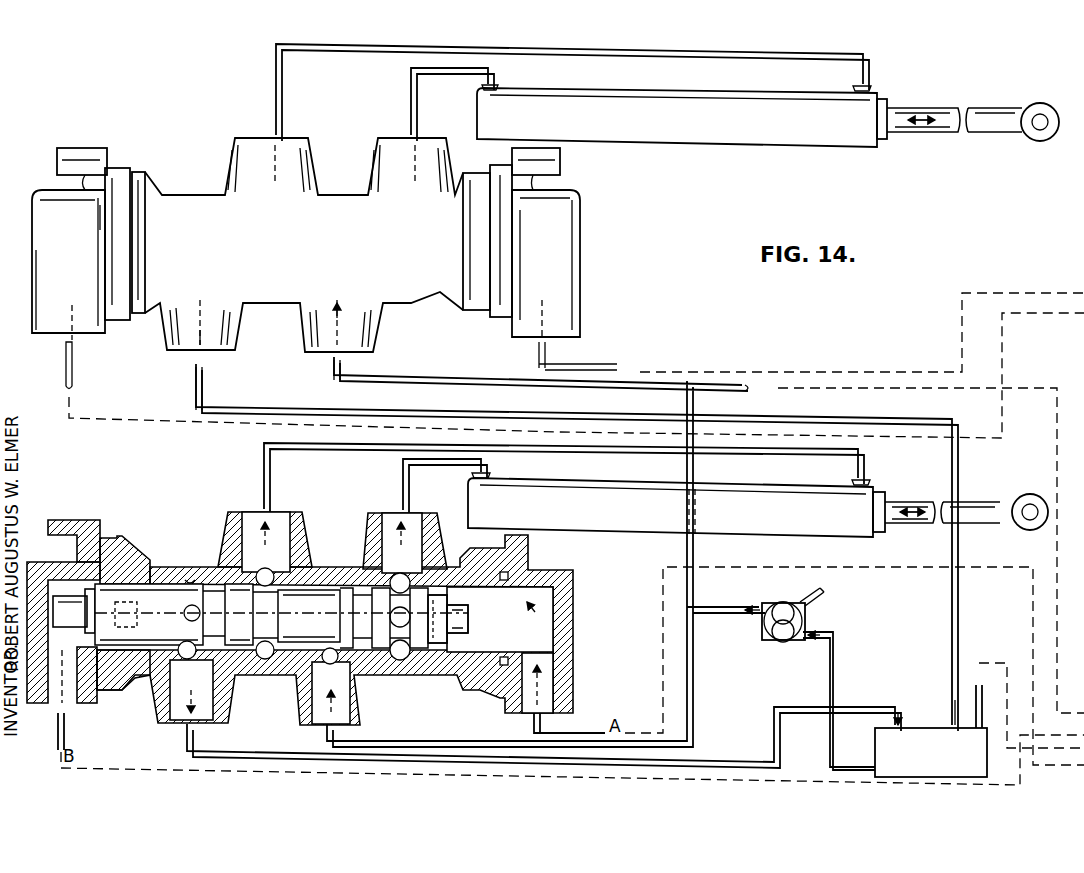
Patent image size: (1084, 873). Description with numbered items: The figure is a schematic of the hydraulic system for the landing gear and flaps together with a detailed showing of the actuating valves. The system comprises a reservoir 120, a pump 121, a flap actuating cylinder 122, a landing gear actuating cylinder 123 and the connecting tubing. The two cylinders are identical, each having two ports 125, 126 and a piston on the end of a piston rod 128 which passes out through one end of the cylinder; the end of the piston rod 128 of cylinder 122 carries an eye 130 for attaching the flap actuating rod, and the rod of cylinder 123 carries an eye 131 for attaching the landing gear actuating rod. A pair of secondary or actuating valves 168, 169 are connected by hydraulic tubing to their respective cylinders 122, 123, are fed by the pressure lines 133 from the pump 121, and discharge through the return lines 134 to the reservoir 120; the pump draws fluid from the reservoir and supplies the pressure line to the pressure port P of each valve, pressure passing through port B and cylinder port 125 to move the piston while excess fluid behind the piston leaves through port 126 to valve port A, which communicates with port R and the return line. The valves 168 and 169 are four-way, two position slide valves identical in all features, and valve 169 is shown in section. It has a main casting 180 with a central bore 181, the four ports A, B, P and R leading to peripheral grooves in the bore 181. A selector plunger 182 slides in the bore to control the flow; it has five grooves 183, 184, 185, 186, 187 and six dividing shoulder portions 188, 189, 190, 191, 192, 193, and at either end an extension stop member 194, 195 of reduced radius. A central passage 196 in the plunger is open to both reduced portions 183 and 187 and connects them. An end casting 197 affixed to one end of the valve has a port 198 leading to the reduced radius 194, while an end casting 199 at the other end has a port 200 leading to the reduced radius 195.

The reservoir 120 is at (930, 728).
The pump 121 is at (805, 607).
The flap actuating cylinder 122 is at (665, 530).
The landing gear actuating cylinder 123 is at (775, 142).
The port 125 is at (497, 90).
The port 126 is at (870, 92).
The piston rod 128 is at (897, 130).
The eye 130 is at (1032, 510).
The eye 131 is at (1040, 118).
The pressure line 133 is at (450, 382).
The return line 134 is at (283, 409).
The secondary valve 168 is at (200, 152).
The secondary valve 169 is at (178, 506).
The main casting 180 is at (345, 568).
The central bore 181 is at (190, 584).
The selector plunger 182 is at (291, 640).
The groove 183 is at (150, 690).
The groove 184 is at (222, 565).
The groove 185 is at (330, 568).
The groove 186 is at (365, 645).
The groove 187 is at (408, 655).
The dividing shoulder portion 188 is at (128, 556).
The dividing shoulder portion 189 is at (190, 578).
The dividing shoulder portion 190 is at (250, 680).
The dividing shoulder portion 191 is at (362, 680).
The dividing shoulder portion 192 is at (360, 570).
The dividing shoulder portion 193 is at (452, 598).
The extension stop member 194 is at (68, 598).
The extension stop member 195 is at (468, 631).
The central passage 196 is at (183, 613).
The end casting 197 is at (100, 530).
The port 198 is at (75, 698).
The end casting 199 is at (576, 588).
The port 200 is at (527, 710).